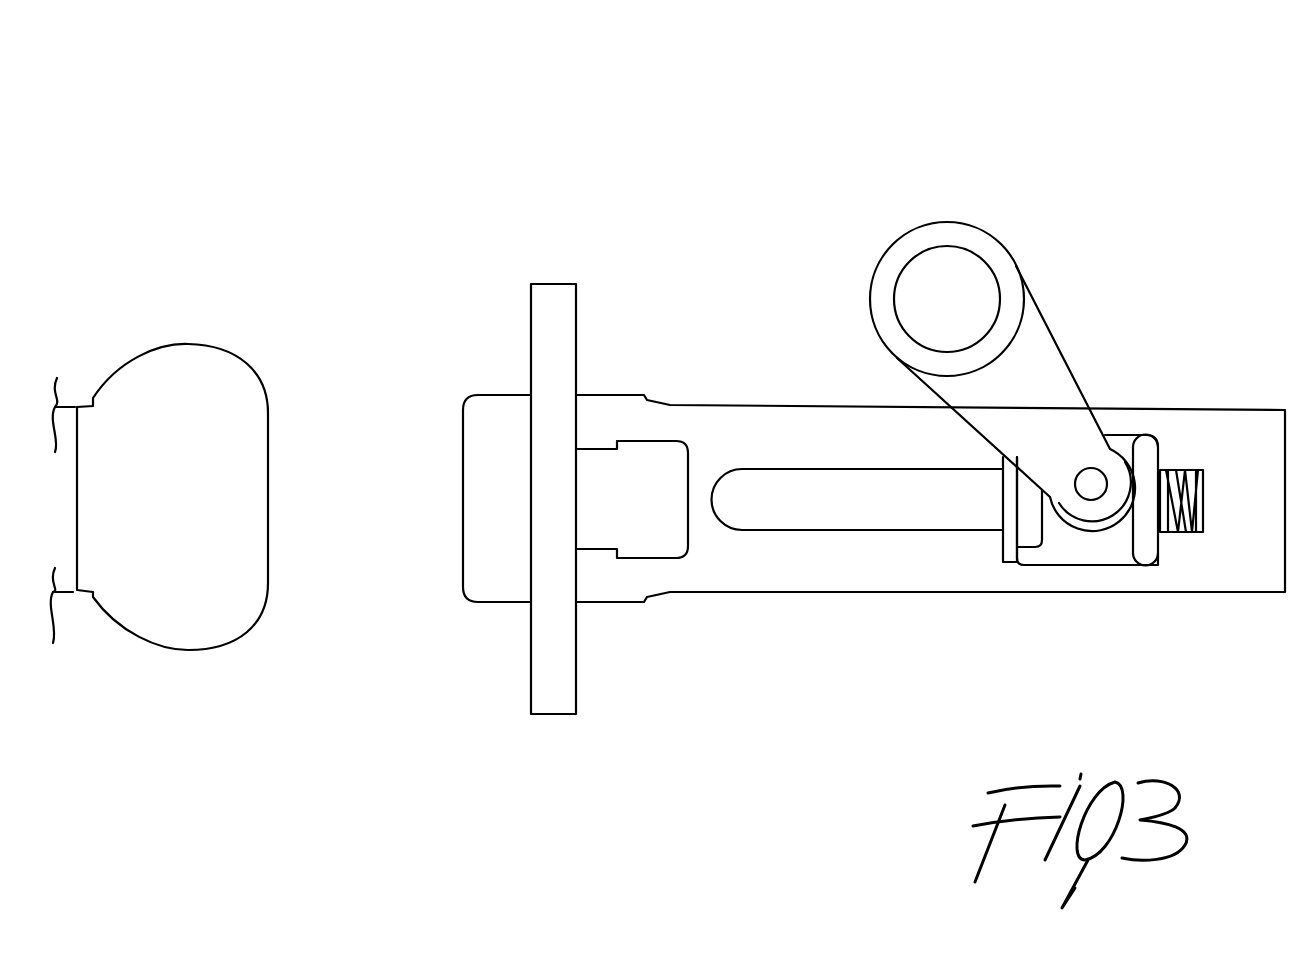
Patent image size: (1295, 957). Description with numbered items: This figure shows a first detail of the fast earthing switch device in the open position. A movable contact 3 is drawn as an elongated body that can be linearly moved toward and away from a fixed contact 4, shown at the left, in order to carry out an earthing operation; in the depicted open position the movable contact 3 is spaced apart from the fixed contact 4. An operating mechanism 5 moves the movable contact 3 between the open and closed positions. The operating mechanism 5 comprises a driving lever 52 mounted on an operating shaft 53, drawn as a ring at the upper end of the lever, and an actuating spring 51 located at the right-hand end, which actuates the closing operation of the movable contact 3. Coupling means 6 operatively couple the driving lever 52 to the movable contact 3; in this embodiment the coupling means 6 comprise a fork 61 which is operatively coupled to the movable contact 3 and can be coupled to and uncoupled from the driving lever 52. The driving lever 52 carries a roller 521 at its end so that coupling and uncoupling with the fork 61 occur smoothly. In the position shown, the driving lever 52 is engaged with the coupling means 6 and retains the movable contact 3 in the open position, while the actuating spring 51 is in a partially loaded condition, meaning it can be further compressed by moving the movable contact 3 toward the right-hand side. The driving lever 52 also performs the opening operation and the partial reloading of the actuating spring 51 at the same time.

The movable contact 3 is at (743, 478).
The fixed contact 4 is at (150, 367).
The operating mechanism 5 is at (1002, 354).
The coupling means 6 is at (1130, 500).
The actuating spring 51 is at (1185, 513).
The driving lever 52 is at (1040, 355).
The operating shaft 53 is at (945, 268).
The fork 61 is at (1122, 555).
The roller 521 is at (1087, 523).